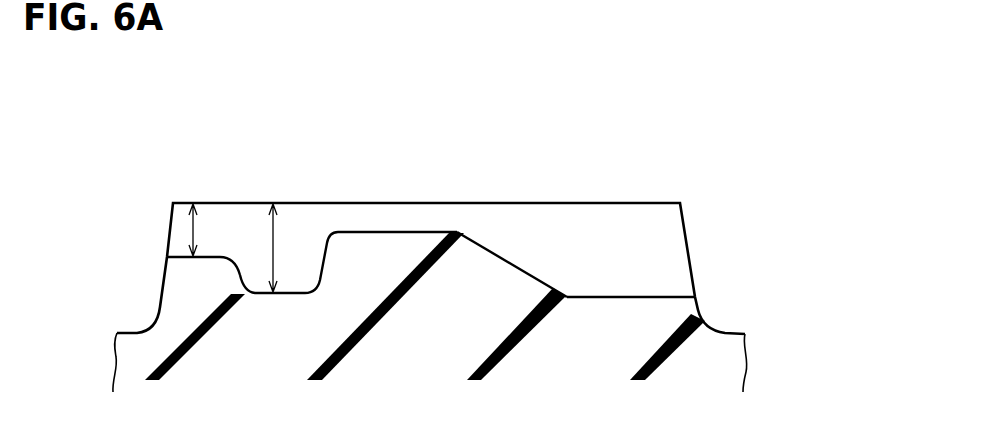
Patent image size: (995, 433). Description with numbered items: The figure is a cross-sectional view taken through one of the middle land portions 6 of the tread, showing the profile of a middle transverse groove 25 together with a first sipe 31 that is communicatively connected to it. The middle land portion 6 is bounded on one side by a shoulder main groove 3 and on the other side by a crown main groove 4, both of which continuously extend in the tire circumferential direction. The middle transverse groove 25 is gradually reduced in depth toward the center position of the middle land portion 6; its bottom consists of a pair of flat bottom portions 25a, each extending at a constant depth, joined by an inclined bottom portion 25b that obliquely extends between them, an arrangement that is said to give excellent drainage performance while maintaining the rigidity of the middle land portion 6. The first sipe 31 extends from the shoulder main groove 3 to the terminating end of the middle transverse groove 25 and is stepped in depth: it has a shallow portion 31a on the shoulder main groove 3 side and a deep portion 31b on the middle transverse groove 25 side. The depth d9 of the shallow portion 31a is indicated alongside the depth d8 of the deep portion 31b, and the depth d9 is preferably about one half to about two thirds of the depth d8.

The shoulder main groove 3 is at (123, 306).
The crown main groove 4 is at (724, 301).
The middle land portion 6 is at (656, 190).
The middle transverse groove 25 is at (516, 186).
The flat bottom portion 25a is at (406, 218).
The inclined bottom portion 25b is at (512, 213).
The first sipe 31 is at (252, 168).
The shallow portion 31a is at (205, 239).
The deep portion 31b is at (289, 195).
The depth of the deep portion d8 is at (273, 247).
The depth of the shallow portion d9 is at (192, 230).